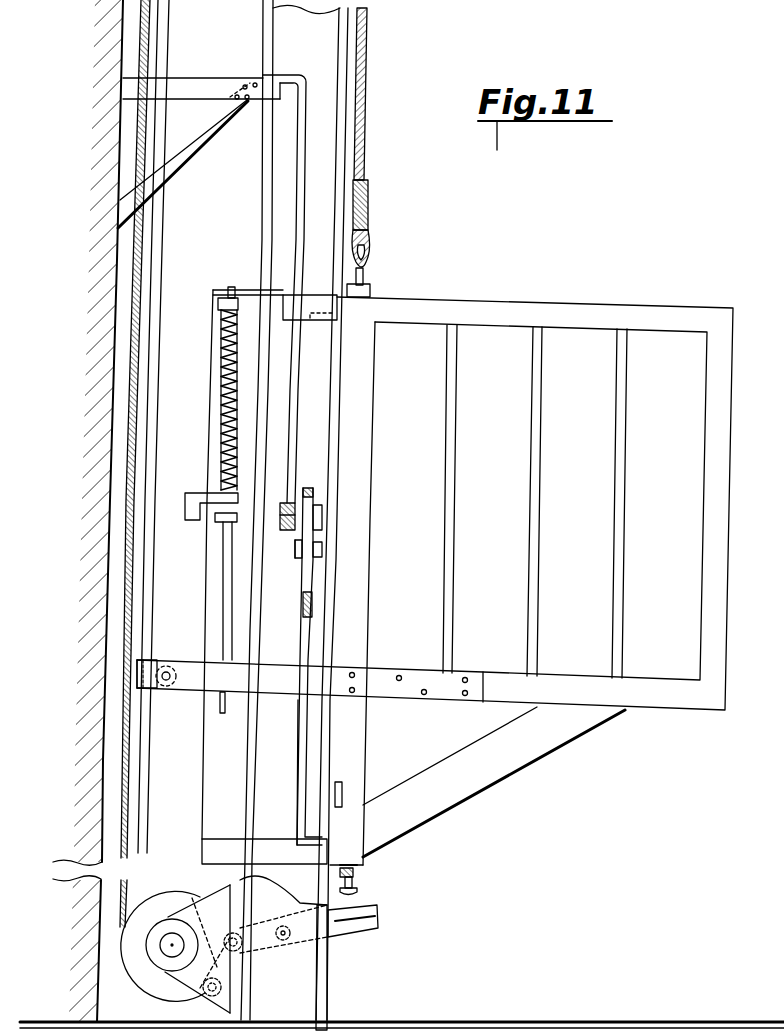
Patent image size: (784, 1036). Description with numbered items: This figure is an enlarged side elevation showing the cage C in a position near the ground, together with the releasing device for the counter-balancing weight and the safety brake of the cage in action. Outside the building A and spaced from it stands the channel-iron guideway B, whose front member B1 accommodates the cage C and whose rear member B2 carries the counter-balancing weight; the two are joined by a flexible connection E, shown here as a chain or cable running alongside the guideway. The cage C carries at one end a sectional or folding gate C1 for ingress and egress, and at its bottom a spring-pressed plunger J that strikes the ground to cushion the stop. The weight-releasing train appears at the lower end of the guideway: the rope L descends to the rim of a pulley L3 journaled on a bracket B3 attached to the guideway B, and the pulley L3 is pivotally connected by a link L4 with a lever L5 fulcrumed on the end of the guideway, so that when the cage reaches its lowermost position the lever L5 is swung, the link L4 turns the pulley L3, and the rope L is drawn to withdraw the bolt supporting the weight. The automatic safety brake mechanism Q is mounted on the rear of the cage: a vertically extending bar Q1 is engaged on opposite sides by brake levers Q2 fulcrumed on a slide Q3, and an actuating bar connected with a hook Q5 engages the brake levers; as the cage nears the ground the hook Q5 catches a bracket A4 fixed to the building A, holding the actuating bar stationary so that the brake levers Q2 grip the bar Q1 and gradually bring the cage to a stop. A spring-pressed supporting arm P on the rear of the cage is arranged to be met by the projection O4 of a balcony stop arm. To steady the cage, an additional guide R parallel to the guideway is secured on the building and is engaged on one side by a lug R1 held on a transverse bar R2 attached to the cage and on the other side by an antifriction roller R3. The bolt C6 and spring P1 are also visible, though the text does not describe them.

The building A is at (75, 511).
The bracket A4 is at (212, 84).
The guideway B is at (240, 755).
The front member B1 is at (346, 75).
The rear member B2 is at (250, 812).
The bracket B3 is at (209, 905).
The cage C is at (435, 568).
The sectional or folding gate C1 is at (341, 782).
The bolt C6 is at (358, 890).
The flexible connection E is at (369, 185).
The plunger J is at (350, 858).
The rope L is at (135, 560).
The pulley L3 is at (152, 903).
The link L4 is at (235, 972).
The lever L5 is at (379, 916).
The supporting arm P is at (209, 592).
The spring P1 is at (222, 328).
The brake mechanism Q is at (281, 553).
The bar Q1 is at (300, 728).
The brake levers Q2 is at (307, 582).
The slide Q3 is at (322, 547).
The projection O4 is at (322, 510).
The hook Q5 is at (300, 243).
The guide R is at (152, 617).
The lug R1 is at (137, 670).
The transverse bar R2 is at (228, 677).
The antifriction roller R3 is at (166, 690).